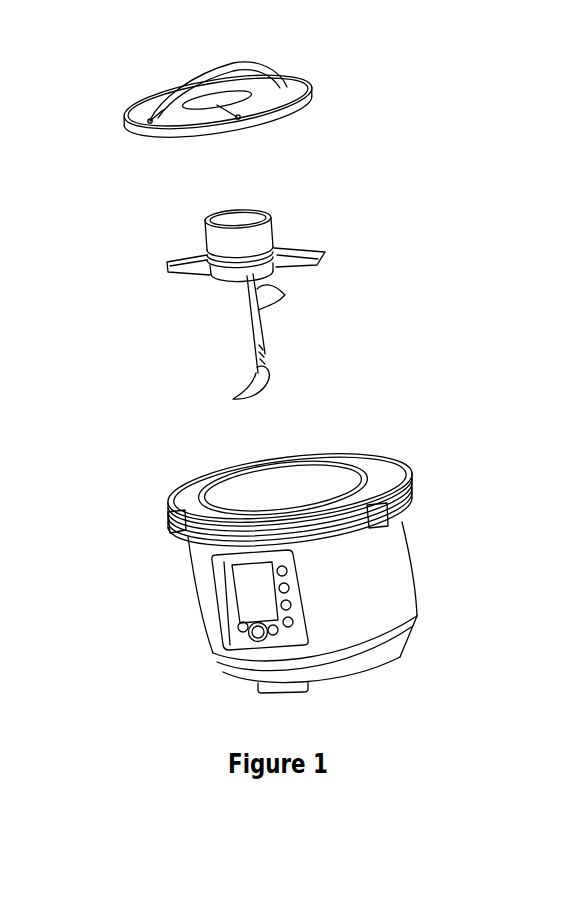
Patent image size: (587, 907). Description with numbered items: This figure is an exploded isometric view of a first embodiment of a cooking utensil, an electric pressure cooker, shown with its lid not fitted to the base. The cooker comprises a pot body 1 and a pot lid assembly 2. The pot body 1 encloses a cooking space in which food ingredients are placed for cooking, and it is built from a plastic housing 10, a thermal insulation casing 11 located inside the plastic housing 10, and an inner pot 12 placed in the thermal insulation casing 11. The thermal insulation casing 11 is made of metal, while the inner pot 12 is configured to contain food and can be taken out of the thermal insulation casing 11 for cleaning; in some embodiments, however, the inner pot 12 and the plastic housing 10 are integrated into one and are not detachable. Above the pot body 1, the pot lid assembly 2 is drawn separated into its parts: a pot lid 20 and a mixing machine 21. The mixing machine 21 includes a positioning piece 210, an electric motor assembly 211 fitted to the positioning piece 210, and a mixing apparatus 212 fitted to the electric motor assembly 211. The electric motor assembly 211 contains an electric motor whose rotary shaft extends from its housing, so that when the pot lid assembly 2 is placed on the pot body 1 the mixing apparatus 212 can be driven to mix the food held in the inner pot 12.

The pot body 1 is at (396, 580).
The plastic housing 10 is at (207, 590).
The thermal insulation casing 11 is at (190, 533).
The inner pot 12 is at (335, 470).
The pot lid assembly 2 is at (405, 38).
The pot lid 20 is at (293, 90).
The mixing machine 21 is at (309, 243).
The positioning piece 210 is at (185, 270).
The electric motor assembly 211 is at (222, 220).
The mixing apparatus 212 is at (258, 335).